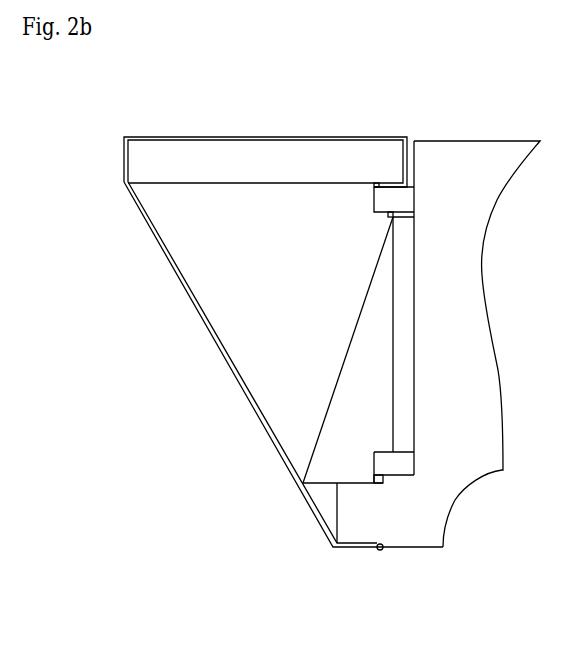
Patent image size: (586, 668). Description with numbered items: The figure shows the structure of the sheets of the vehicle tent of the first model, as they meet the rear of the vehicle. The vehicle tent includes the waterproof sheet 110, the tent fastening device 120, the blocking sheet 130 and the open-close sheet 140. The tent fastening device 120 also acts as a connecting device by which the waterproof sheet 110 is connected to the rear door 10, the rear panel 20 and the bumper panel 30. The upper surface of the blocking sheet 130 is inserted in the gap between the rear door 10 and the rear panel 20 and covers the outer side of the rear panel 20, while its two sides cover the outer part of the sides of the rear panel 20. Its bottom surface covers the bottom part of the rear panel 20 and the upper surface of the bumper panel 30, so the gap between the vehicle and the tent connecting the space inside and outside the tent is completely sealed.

The rear door 10 is at (145, 163).
The waterproof sheet 110 is at (231, 137).
The rear panel 20 is at (397, 198).
The tent fastening device 120 is at (377, 183).
The blocking sheet 130 is at (377, 200).
The open-close sheet 140 is at (177, 275).
The bumper panel 30 is at (355, 545).